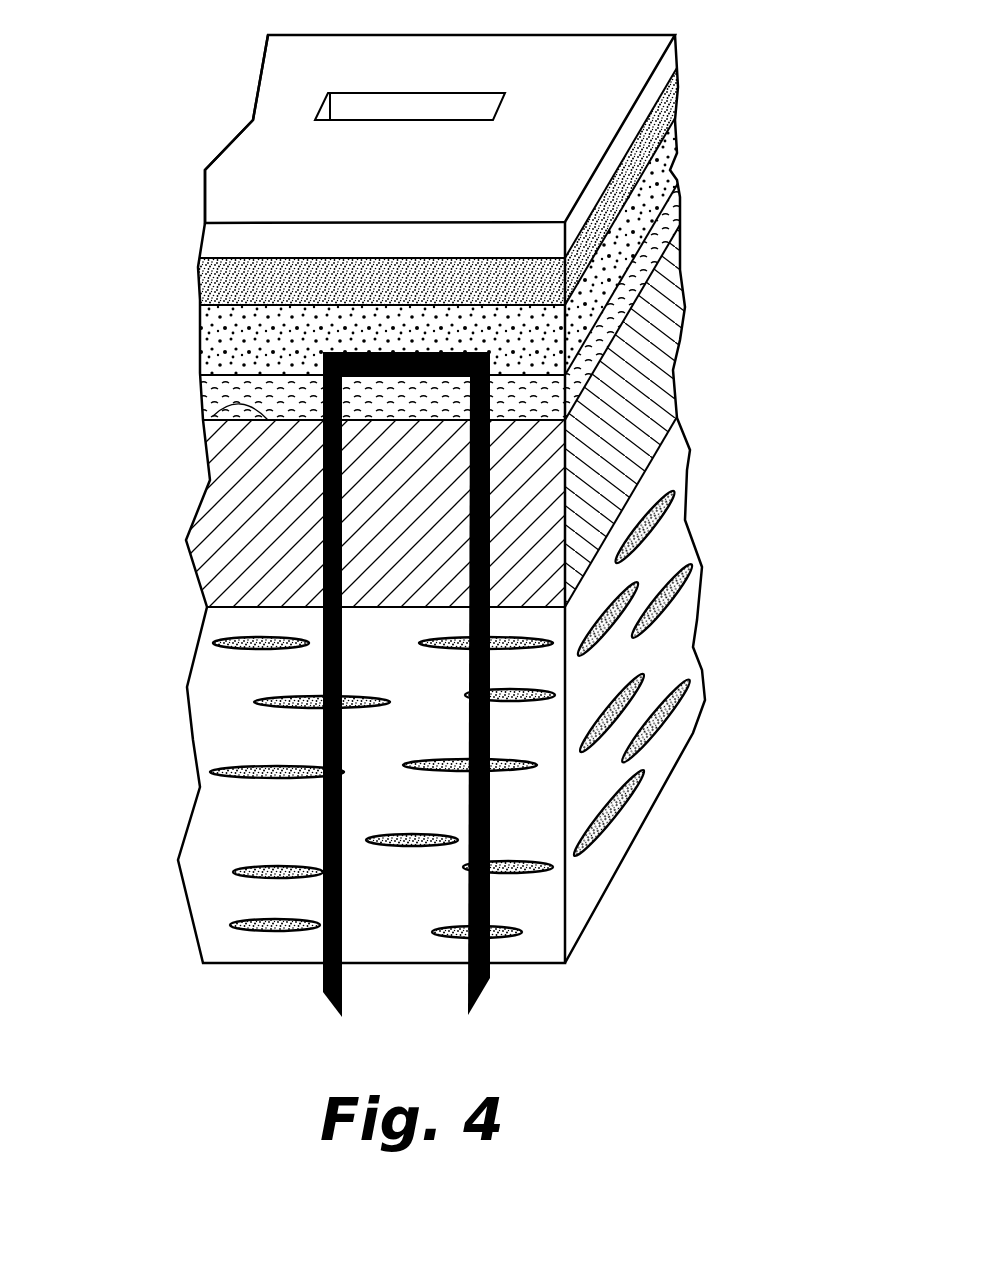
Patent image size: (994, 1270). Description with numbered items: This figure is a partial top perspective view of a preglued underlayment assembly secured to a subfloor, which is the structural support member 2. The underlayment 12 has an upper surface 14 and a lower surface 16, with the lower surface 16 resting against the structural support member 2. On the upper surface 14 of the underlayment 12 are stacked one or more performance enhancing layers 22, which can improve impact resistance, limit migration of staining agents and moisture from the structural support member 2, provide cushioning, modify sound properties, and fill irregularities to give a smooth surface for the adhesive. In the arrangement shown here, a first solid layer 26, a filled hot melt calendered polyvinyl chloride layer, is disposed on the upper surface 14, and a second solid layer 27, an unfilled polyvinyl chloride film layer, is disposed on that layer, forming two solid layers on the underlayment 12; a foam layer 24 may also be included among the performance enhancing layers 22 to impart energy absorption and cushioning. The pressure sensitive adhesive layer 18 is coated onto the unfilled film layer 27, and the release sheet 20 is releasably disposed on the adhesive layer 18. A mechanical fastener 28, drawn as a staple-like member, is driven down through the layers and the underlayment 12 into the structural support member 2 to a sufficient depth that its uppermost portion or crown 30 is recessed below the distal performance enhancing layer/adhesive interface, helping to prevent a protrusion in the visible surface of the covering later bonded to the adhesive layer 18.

The structural support member 2 is at (657, 770).
The underlayment 12 is at (660, 382).
The upper surface 14 is at (252, 402).
The lower surface 16 is at (223, 612).
The pressure sensitive adhesive layer 18 is at (673, 100).
The release sheet 20 is at (576, 108).
The performance enhancing layers 22 is at (702, 129).
The foam layer 24 is at (672, 175).
The first solid layer 26 is at (213, 416).
The second solid layer 27 is at (238, 315).
The mechanical fastener 28 is at (490, 978).
The crown 30 is at (417, 352).